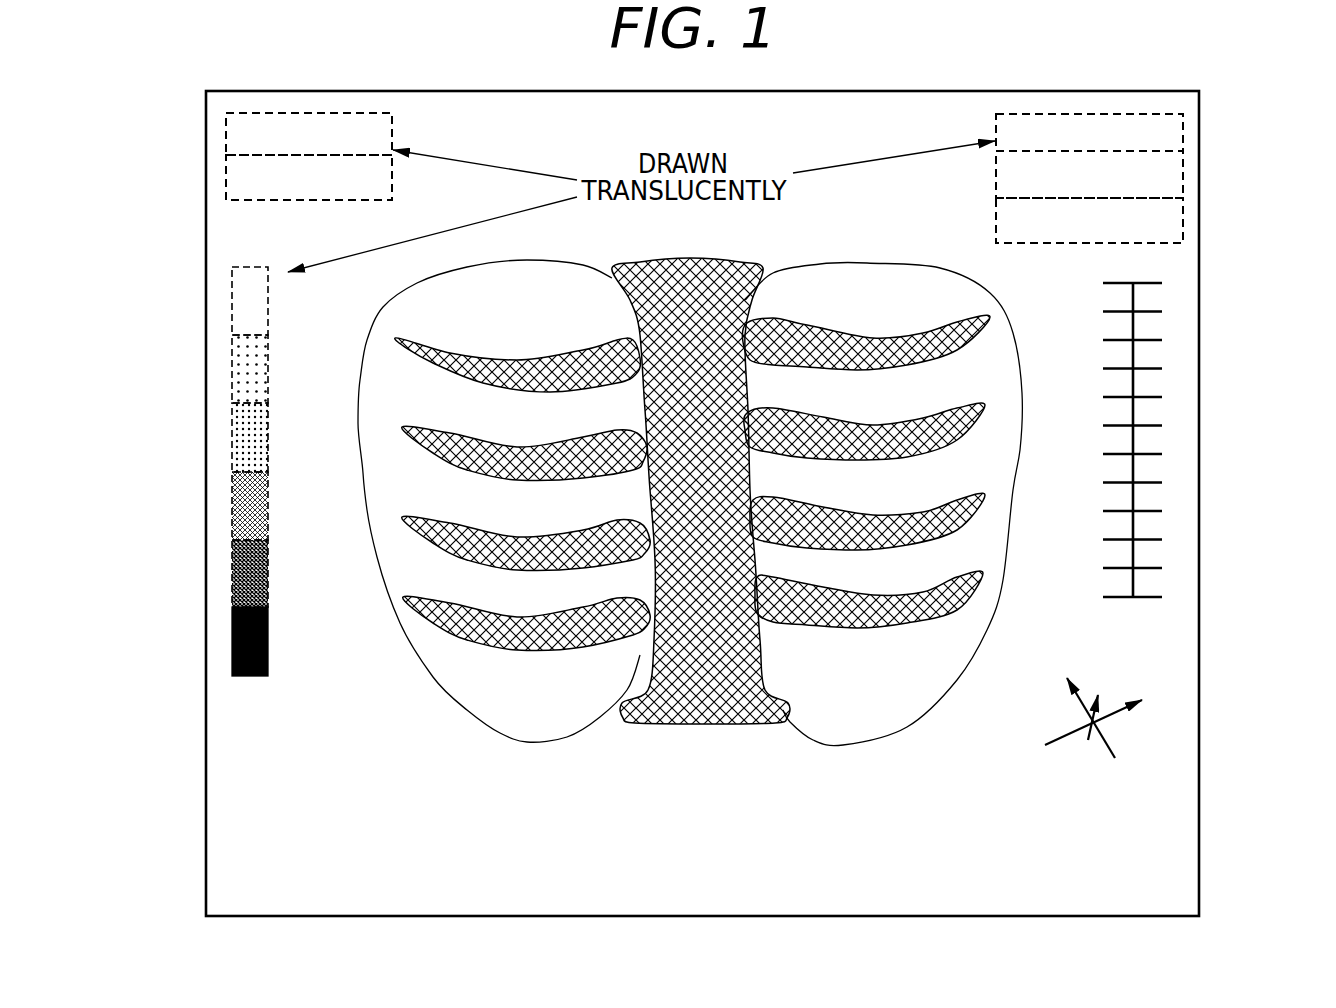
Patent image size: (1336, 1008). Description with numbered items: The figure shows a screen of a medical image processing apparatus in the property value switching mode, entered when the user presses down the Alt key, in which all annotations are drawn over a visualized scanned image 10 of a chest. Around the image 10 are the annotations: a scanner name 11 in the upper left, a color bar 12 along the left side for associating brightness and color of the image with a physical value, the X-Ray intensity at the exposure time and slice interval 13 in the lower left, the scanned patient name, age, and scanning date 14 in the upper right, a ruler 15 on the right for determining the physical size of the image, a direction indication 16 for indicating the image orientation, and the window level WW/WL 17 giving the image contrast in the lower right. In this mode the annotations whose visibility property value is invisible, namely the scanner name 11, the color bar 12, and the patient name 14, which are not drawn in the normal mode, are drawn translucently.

The scanned image 10 is at (823, 260).
The scanner name 11 is at (189, 157).
The color bar 12 is at (189, 480).
The X-Ray intensity at the exposure time and slice interval 13 is at (189, 838).
The scanned patient name, age, and scanning date 14 is at (1212, 170).
The ruler 15 is at (1212, 425).
The direction indication 16 is at (1212, 700).
The window level WW/WL 17 is at (1212, 855).